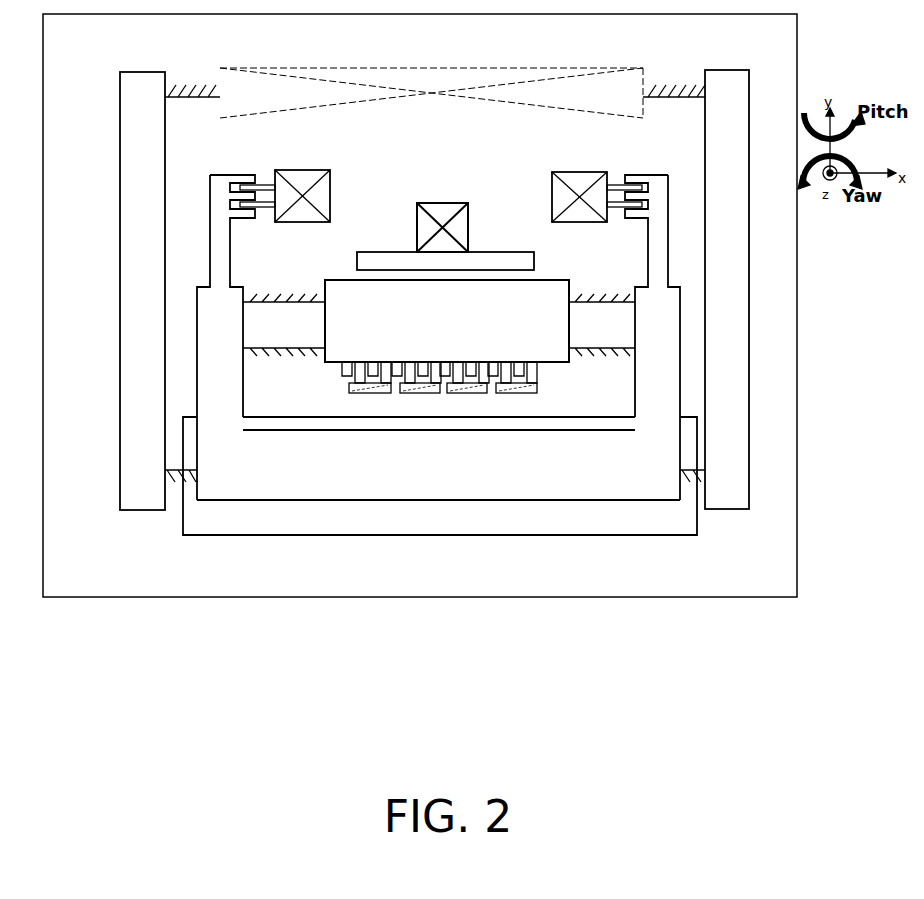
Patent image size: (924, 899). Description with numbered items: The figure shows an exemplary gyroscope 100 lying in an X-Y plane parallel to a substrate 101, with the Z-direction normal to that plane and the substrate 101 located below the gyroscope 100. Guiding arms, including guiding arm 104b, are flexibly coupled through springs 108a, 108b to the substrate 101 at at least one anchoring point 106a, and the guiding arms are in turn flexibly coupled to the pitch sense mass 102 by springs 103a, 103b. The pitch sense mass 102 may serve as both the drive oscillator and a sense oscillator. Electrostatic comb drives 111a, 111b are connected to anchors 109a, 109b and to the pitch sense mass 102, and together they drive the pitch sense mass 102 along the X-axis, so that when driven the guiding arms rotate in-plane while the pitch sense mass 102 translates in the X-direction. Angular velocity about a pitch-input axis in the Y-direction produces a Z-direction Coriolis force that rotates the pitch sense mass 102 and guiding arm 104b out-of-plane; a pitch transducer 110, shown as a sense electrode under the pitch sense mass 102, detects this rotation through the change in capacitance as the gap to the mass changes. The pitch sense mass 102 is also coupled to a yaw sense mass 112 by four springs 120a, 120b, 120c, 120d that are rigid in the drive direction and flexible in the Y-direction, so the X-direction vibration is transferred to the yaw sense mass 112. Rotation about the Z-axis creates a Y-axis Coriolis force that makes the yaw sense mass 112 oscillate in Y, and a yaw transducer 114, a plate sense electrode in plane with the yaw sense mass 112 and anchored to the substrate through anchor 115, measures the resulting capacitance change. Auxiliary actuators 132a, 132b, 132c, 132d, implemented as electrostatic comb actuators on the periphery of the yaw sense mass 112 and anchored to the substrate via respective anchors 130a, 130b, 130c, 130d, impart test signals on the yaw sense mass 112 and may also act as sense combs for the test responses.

The gyroscope 100 is at (119, 97).
The substrate 101 is at (797, 355).
The pitch sense mass 102 is at (542, 500).
The spring 103a is at (177, 485).
The spring 103b is at (688, 488).
The guiding arm 104b is at (120, 287).
The anchoring point 106a is at (445, 67).
The spring 108a is at (178, 83).
The spring 108b is at (688, 85).
The anchor 109a is at (332, 210).
The anchor 109b is at (555, 193).
The pitch transducer 110 is at (380, 535).
The comb drive 111a is at (257, 172).
The comb drive 111b is at (617, 177).
The yaw sense mass 112 is at (557, 278).
The yaw transducer 114 is at (485, 253).
The anchor 115 is at (415, 230).
The spring 120a is at (247, 305).
The spring 120b is at (573, 305).
The spring 120c is at (247, 352).
The spring 120d is at (575, 352).
The anchor 130a is at (352, 393).
The anchor 130b is at (400, 393).
The anchor 130c is at (467, 393).
The anchor 130d is at (523, 393).
The auxiliary actuator 132a is at (364, 354).
The auxiliary actuator 132b is at (414, 354).
The auxiliary actuator 132c is at (464, 354).
The auxiliary actuator 132d is at (514, 354).